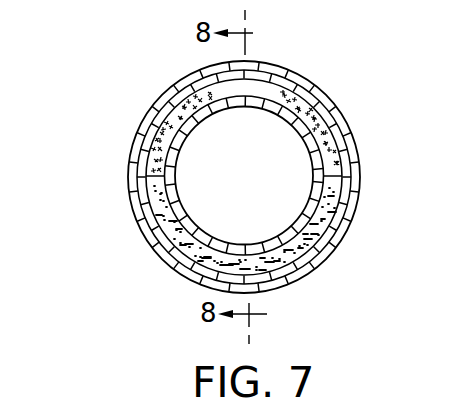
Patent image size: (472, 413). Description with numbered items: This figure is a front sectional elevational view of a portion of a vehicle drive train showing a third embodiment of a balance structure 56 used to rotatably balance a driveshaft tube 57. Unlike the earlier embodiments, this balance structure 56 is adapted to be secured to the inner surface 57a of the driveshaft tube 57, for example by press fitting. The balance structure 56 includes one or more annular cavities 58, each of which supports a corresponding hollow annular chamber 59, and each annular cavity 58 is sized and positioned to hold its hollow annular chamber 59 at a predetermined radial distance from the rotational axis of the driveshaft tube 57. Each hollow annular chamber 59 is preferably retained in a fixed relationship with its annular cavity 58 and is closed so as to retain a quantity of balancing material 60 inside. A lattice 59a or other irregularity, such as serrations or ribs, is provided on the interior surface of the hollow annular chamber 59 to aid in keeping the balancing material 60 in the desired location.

The balance structure 56 is at (263, 64).
The driveshaft tube 57 is at (349, 28).
The inner surface 57a is at (258, 78).
The annular cavity 58 is at (327, 98).
The hollow annular chamber 59 is at (353, 128).
The lattice 59a is at (148, 148).
The balancing material 60 is at (350, 213).